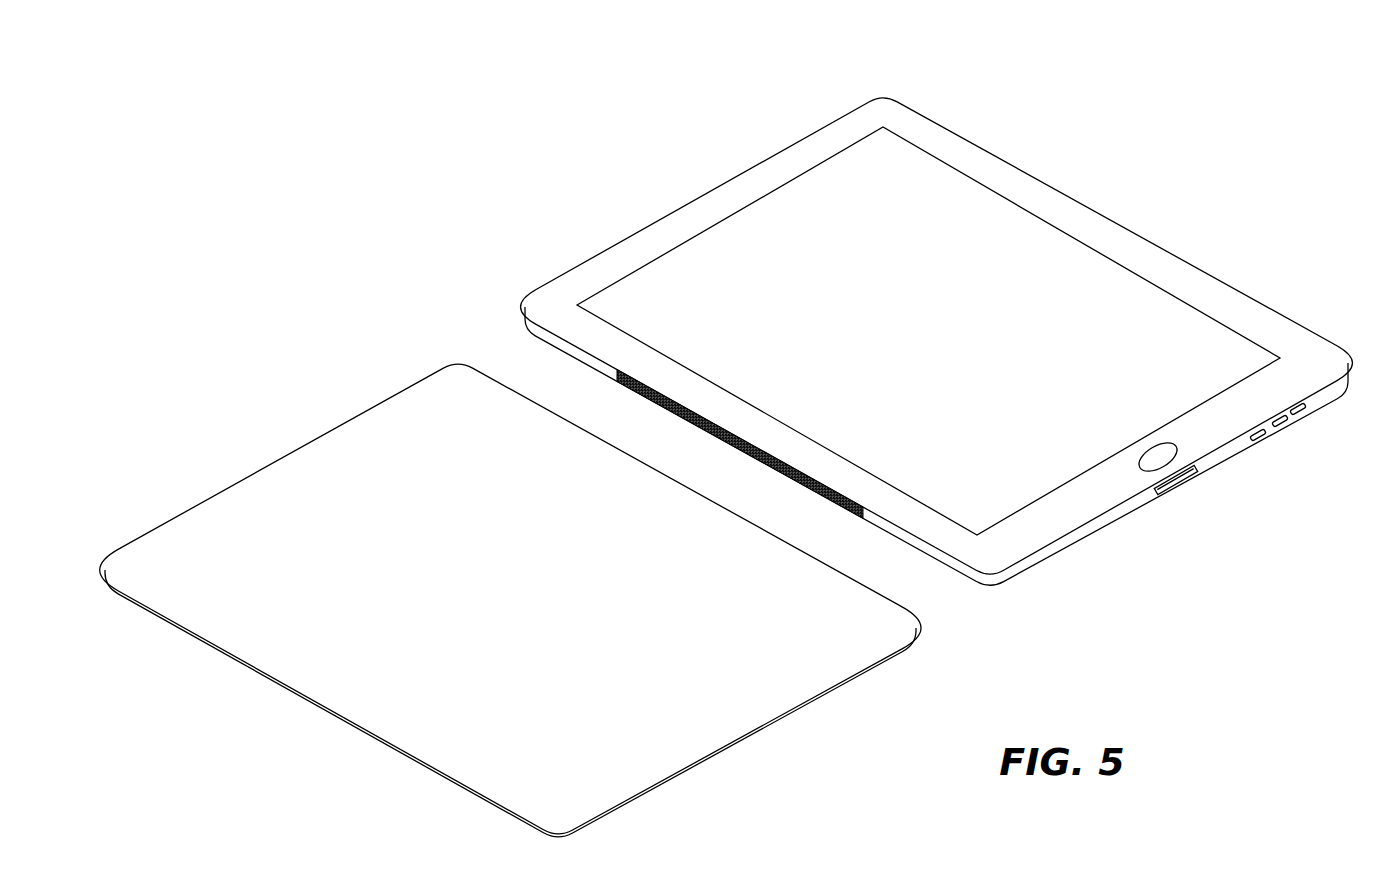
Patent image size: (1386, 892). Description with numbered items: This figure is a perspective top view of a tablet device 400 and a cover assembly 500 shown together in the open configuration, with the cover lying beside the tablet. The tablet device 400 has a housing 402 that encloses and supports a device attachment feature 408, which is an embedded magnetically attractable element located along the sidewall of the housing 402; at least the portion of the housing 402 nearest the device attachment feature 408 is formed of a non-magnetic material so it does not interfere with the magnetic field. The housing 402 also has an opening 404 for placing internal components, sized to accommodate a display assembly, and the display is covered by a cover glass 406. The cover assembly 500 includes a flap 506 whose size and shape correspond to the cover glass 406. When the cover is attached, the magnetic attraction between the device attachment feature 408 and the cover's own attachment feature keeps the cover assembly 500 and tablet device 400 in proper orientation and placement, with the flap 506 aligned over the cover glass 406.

The tablet device 400 is at (672, 149).
The housing 402 is at (1133, 503).
The opening 404 is at (648, 298).
The cover glass 406 is at (892, 196).
The device attachment feature 408 is at (863, 518).
The cover assembly 500 is at (281, 358).
The flap 506 is at (828, 690).